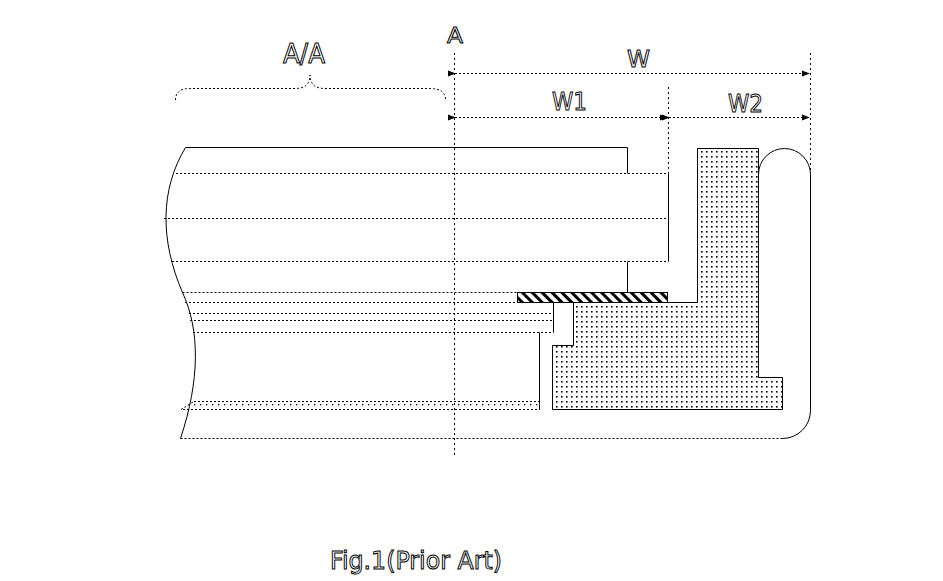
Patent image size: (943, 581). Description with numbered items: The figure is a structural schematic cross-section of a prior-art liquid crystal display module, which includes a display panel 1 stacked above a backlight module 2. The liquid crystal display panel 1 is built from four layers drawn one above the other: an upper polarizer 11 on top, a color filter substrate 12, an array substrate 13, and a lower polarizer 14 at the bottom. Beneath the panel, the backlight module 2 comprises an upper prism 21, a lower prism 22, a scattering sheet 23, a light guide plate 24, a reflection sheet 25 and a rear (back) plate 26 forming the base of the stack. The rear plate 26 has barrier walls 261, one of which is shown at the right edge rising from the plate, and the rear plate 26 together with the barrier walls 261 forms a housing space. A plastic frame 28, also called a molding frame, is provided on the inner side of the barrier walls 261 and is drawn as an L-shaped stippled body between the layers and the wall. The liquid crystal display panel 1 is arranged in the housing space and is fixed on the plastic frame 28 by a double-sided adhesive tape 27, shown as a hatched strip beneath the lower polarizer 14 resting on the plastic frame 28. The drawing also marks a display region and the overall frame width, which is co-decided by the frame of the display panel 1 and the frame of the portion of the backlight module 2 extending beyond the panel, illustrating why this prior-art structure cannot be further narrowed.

The display panel 1 is at (90, 154).
The upper polarizer 11 is at (189, 158).
The color filter substrate 12 is at (182, 200).
The array substrate 13 is at (184, 246).
The lower polarizer 14 is at (181, 276).
The backlight module 2 is at (90, 296).
The upper prism 21 is at (189, 298).
The lower prism 22 is at (194, 320).
The scattering sheet 23 is at (195, 331).
The light guide plate 24 is at (209, 388).
The reflection sheet 25 is at (204, 406).
The rear plate 26 is at (209, 432).
The barrier wall 261 is at (798, 278).
The double-sided adhesive tape 27 is at (651, 294).
The plastic frame 28 is at (738, 330).